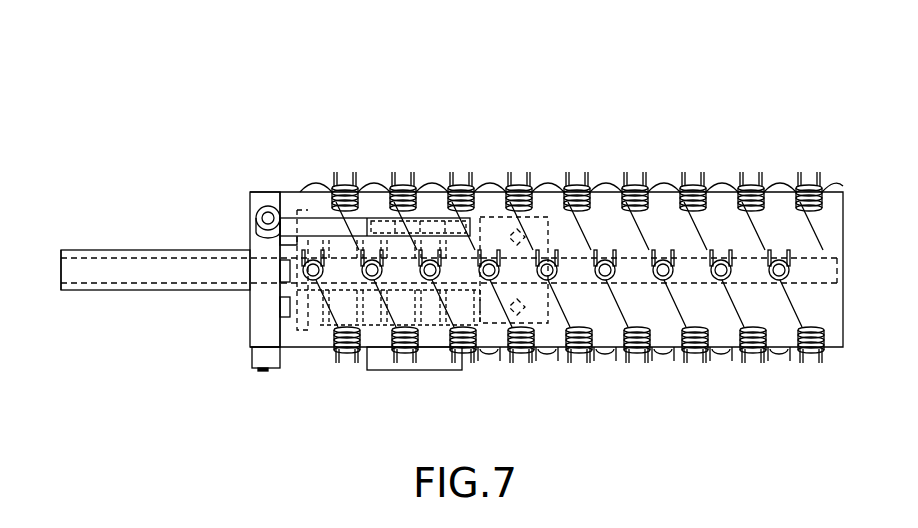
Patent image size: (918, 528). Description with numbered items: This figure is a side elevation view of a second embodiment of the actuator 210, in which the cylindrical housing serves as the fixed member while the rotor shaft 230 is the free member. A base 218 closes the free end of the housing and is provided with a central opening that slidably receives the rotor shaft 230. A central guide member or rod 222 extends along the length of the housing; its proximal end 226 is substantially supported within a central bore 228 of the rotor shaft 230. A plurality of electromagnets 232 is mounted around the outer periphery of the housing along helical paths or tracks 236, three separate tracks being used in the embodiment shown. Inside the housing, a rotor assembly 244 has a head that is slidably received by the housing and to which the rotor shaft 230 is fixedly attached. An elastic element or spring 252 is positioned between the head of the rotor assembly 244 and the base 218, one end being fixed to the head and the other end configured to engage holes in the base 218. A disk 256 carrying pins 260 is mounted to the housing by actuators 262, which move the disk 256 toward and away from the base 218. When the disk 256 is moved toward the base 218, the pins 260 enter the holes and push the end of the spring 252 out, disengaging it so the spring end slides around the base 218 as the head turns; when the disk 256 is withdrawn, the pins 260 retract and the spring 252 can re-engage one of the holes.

The actuator 210 is at (250, 84).
The base 218 is at (298, 210).
The central guide member or rod 222 is at (830, 284).
The proximal end of guide rod 226 is at (274, 283).
The central bore of rotor shaft 228 is at (83, 278).
The rotor shaft 230 is at (199, 249).
The electromagnets 232 is at (642, 360).
The helical paths or tracks 236 is at (737, 298).
The rotor assembly 244 is at (495, 324).
The elastic element or spring 252 is at (338, 318).
The disk 256 is at (250, 194).
The pins 260 is at (282, 322).
The actuators 262 is at (376, 214).